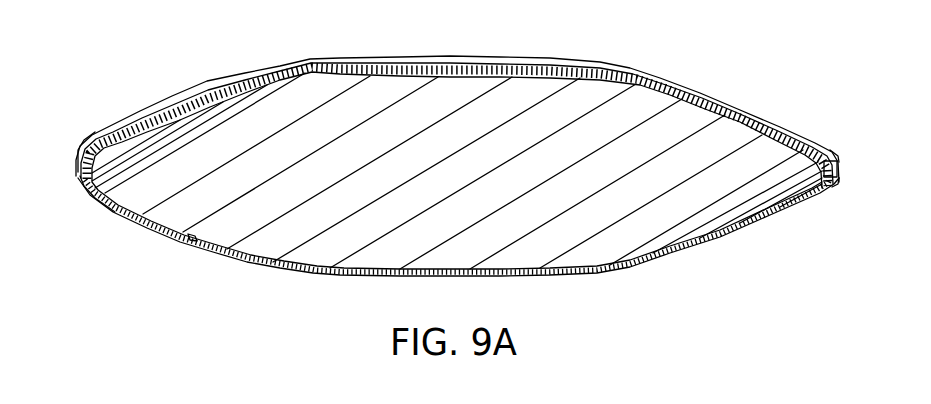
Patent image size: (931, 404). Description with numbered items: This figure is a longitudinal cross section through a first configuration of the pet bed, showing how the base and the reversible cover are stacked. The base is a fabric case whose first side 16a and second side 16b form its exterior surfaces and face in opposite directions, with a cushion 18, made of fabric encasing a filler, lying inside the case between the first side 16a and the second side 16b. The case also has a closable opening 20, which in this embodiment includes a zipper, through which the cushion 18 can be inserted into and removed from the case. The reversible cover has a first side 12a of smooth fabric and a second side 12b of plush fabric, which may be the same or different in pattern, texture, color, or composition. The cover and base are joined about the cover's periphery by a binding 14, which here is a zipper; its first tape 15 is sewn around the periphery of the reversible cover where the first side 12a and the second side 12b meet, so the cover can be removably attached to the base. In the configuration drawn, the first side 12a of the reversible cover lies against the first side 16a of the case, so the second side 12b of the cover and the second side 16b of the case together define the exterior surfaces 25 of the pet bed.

The first side of the reversible cover 12a is at (839, 165).
The second side of the reversible cover 12b is at (837, 153).
The binding 14 is at (827, 178).
The first tape 15 is at (607, 273).
The first side of the case 16a is at (78, 157).
The second side of the case 16b is at (89, 186).
The cushion 18 is at (173, 208).
The closable opening 20 is at (193, 240).
The exterior surfaces 25 is at (655, 70).